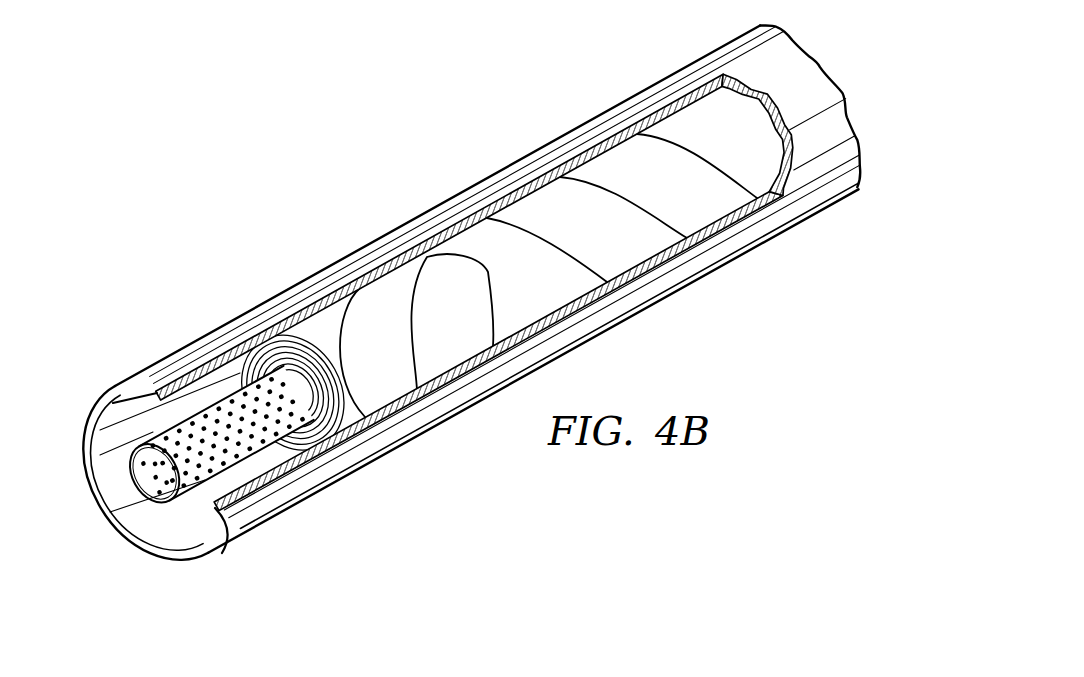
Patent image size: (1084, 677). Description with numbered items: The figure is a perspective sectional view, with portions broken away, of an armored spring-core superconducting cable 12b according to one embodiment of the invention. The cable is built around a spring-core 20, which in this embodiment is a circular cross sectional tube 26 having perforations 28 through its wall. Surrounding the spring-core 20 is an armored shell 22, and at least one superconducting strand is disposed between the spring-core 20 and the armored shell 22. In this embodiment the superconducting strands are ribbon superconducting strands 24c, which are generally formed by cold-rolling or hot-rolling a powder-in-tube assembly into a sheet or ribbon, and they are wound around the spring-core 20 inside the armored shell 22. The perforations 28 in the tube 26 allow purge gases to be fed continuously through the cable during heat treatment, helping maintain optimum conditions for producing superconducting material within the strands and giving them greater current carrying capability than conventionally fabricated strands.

The armored spring-core superconducting cable 12b is at (651, 84).
The spring-core 20 is at (157, 490).
The armored shell 22 is at (383, 265).
The ribbon superconducting strands 24c is at (551, 207).
The tube 26 is at (242, 455).
The perforations 28 is at (218, 418).